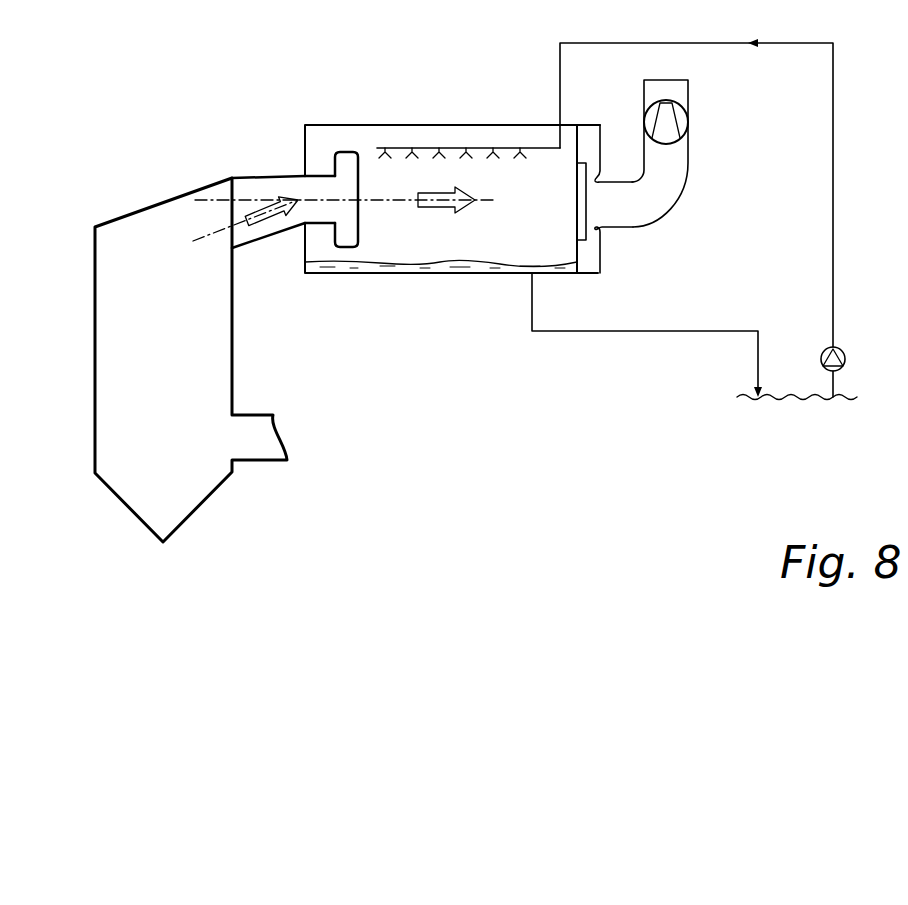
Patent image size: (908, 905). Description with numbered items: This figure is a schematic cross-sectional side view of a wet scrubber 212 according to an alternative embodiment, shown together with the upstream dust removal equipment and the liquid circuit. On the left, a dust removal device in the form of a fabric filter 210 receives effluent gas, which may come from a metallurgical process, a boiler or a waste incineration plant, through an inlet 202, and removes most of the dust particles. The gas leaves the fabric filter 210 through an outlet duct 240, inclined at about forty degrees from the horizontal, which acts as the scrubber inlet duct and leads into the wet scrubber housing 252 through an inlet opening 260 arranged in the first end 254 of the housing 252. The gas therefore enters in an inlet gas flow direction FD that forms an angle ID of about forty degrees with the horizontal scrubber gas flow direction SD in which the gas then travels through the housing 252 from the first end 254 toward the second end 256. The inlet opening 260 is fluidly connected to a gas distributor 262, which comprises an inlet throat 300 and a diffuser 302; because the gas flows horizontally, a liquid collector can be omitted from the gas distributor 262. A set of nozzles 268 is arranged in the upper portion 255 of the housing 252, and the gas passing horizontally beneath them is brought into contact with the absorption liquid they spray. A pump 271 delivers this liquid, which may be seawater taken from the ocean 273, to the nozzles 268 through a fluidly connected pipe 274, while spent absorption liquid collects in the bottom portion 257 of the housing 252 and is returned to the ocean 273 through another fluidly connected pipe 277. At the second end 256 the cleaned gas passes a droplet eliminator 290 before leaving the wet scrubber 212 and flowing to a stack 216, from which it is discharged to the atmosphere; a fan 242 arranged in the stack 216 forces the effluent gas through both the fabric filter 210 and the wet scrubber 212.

The fabric filter 210 is at (119, 209).
The inlet 202 is at (257, 461).
The outlet duct 240 is at (236, 176).
The inlet opening 260 is at (290, 192).
The inlet throat 300 is at (313, 176).
The diffuser 302 is at (345, 151).
The upper portion 255 is at (540, 126).
The wet scrubber 212 is at (385, 118).
The nozzles 268 is at (447, 147).
The housing 252 is at (403, 285).
The first end 254 is at (305, 255).
The gas distributor 262 is at (342, 256).
The bottom portion 257 is at (507, 277).
The droplet eliminator 290 is at (586, 195).
The second end 256 is at (600, 250).
The stack 216 is at (688, 158).
The fan 242 is at (687, 105).
The pipe 274 is at (833, 197).
The pump 271 is at (825, 350).
The pipe 277 is at (613, 331).
The ocean 273 is at (852, 395).
The angle ID is at (217, 230).
The inlet gas flow direction FD is at (268, 224).
The scrubber gas flow direction SD is at (437, 207).